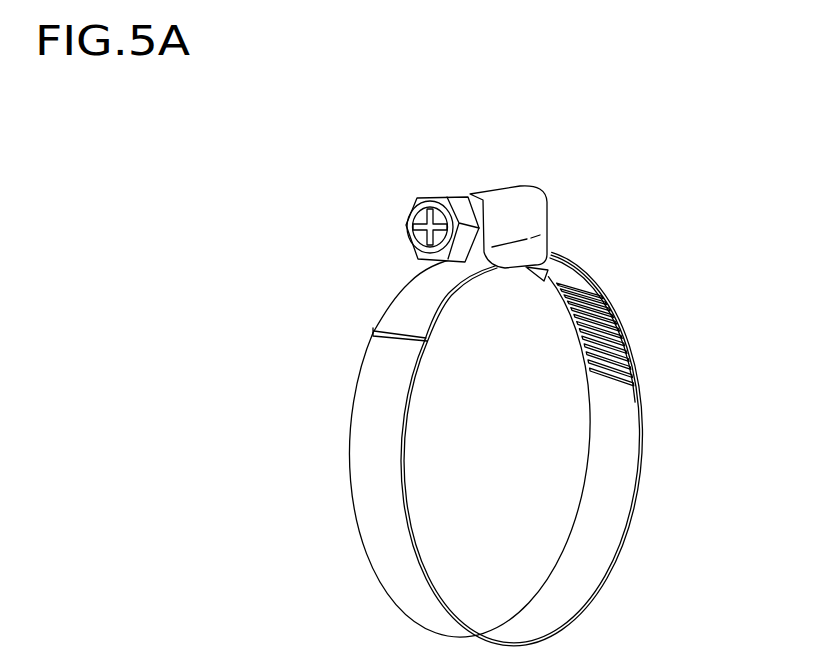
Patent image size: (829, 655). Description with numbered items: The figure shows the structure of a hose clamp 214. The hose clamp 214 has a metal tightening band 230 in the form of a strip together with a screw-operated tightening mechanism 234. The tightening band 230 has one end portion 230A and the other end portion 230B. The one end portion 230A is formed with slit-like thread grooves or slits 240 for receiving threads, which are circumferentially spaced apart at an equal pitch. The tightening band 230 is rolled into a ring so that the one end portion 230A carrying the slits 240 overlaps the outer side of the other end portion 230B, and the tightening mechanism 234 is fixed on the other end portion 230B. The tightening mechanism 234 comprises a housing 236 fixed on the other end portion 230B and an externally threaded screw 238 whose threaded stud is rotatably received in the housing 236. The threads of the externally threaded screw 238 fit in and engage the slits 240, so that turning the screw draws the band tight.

The hose clamp 214 is at (484, 362).
The tightening band 230 is at (623, 455).
The one end portion 230A is at (397, 320).
The other end portion 230B is at (542, 270).
The tightening mechanism 234 is at (477, 183).
The housing 236 is at (530, 211).
The externally threaded screw 238 is at (405, 246).
The slits 240 is at (627, 337).